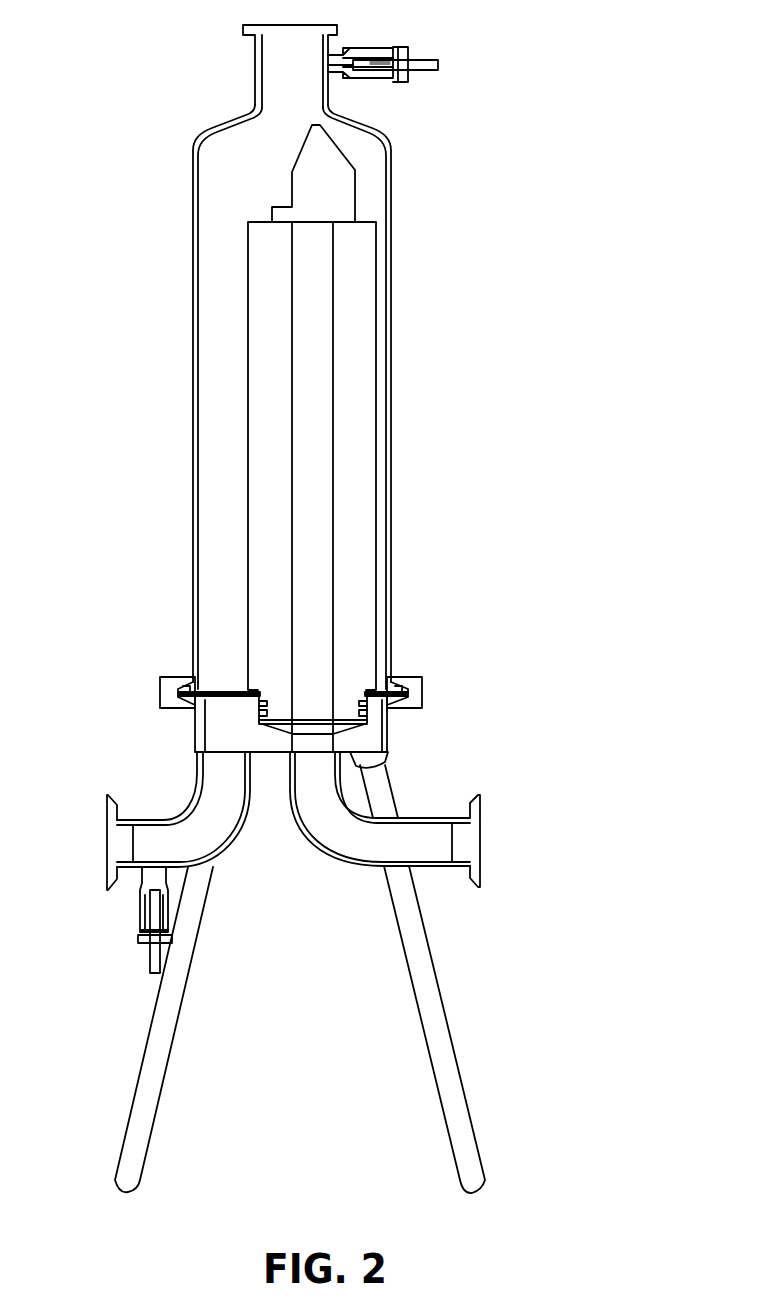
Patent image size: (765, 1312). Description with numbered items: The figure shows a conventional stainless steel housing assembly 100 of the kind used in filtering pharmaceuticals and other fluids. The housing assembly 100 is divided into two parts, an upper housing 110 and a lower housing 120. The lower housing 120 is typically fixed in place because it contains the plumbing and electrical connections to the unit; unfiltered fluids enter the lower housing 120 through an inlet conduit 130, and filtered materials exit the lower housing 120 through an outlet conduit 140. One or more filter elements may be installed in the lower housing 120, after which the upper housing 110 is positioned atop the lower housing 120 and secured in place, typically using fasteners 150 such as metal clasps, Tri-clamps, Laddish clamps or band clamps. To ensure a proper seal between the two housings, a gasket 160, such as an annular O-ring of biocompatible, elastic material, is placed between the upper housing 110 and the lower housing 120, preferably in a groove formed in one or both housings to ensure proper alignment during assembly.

The housing assembly 100 is at (478, 302).
The upper housing 110 is at (192, 327).
The lower housing 120 is at (193, 728).
The inlet conduit 130 is at (123, 877).
The outlet conduit 140 is at (438, 868).
The fasteners 150 is at (423, 690).
The gasket 160 is at (372, 690).